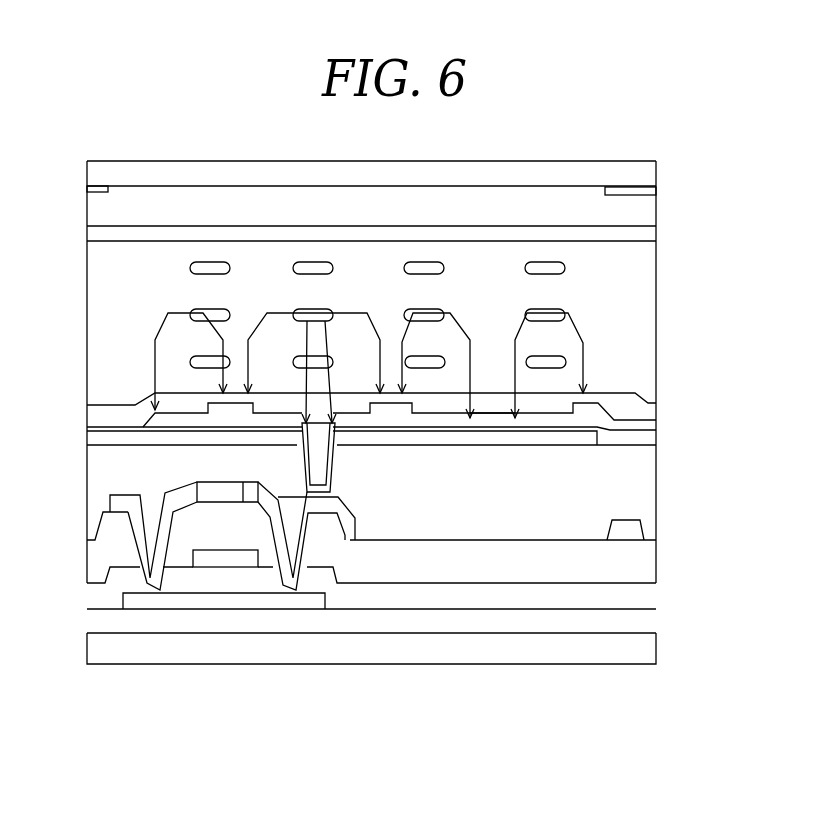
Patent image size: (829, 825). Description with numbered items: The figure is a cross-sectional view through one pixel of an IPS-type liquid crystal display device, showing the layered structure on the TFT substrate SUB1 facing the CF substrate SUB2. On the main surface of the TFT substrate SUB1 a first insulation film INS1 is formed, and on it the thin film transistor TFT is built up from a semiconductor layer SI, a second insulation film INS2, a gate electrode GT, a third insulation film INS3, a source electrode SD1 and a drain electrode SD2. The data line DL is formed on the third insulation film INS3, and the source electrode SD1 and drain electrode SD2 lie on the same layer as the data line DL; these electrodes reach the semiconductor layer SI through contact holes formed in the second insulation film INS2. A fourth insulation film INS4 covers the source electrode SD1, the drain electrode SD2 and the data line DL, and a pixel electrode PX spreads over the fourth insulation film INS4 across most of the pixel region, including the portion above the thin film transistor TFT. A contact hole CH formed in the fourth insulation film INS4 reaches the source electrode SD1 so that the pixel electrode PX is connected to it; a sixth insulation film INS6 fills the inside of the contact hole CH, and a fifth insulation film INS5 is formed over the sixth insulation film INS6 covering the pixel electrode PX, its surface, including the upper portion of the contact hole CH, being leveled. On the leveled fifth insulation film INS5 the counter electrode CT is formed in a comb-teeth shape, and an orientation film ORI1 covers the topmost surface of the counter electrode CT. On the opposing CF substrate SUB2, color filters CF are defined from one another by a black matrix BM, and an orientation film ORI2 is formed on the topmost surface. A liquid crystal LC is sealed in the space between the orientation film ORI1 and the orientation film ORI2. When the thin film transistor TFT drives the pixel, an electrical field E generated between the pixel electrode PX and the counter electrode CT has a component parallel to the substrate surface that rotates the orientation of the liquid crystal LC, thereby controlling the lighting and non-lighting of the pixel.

The black matrix BM is at (100, 185).
The CF substrate SUB2 is at (641, 178).
The color filter CF is at (641, 213).
The orientation film ORI2 is at (647, 232).
The liquid crystal LC is at (565, 270).
The electrical field E is at (583, 343).
The orientation film ORI1 is at (641, 396).
The counter electrode CT is at (641, 421).
The fifth insulation film INS5 is at (641, 446).
The fourth insulation film INS4 is at (641, 492).
The data line DL is at (641, 528).
The third insulation film INS3 is at (641, 562).
The second insulation film INS2 is at (641, 597).
The first insulation film INS1 is at (641, 624).
The TFT substrate SUB1 is at (611, 653).
The drain electrode SD2 is at (143, 583).
The semiconductor layer SI is at (183, 603).
The gate electrode GT is at (225, 558).
The thin film transistor TFT is at (240, 478).
The source electrode SD1 is at (328, 507).
The contact hole CH is at (335, 457).
The sixth insulation film INS6 is at (335, 477).
The pixel electrode PX is at (513, 437).